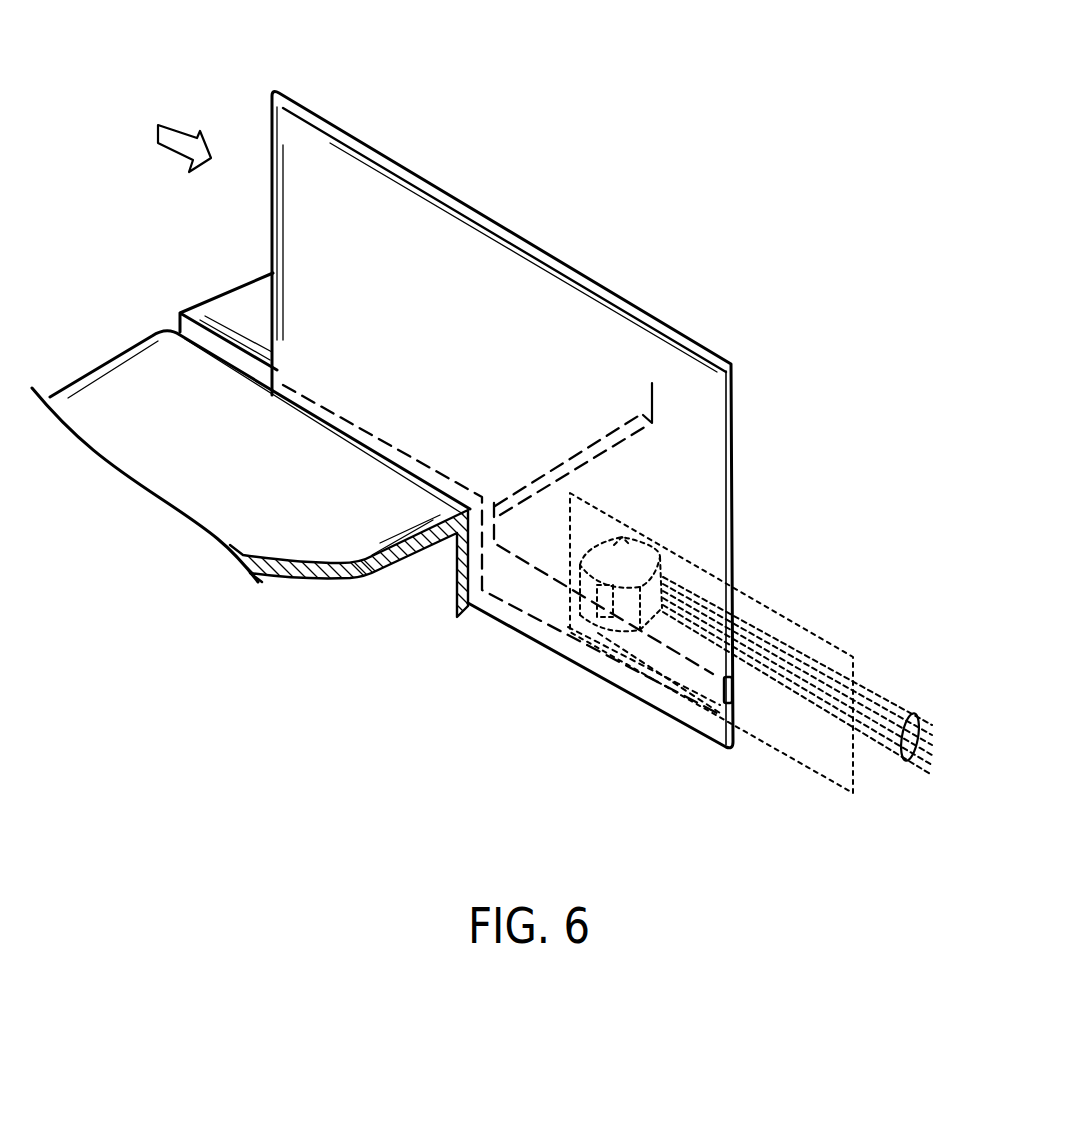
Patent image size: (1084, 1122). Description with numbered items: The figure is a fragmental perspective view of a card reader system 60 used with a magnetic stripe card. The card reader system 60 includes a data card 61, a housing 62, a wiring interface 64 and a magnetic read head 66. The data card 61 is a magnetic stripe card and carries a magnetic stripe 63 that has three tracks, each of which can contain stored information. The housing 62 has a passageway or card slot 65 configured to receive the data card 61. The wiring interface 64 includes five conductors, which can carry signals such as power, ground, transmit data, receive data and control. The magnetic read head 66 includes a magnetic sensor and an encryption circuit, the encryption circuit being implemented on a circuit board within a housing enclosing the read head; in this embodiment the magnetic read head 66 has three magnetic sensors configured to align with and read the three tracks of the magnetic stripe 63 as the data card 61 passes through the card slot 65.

The card reader system 60 is at (713, 126).
The data card 61 is at (718, 427).
The housing 62 is at (232, 298).
The magnetic stripe 63 is at (733, 707).
The wiring interface 64 is at (907, 761).
The card slot 65 is at (174, 328).
The magnetic read head 66 is at (642, 557).